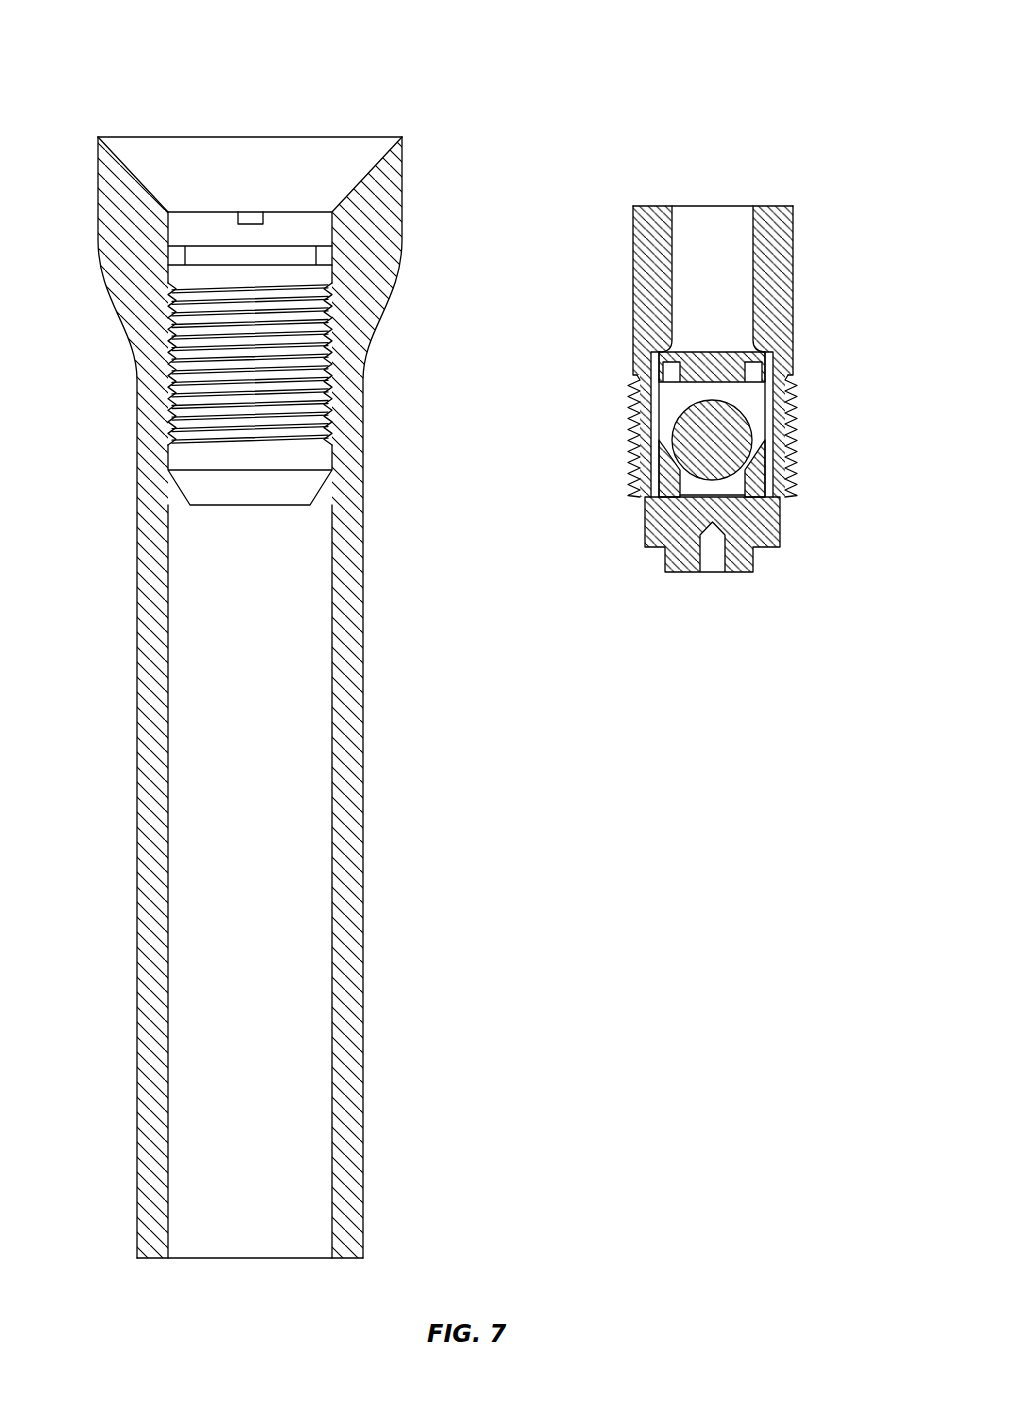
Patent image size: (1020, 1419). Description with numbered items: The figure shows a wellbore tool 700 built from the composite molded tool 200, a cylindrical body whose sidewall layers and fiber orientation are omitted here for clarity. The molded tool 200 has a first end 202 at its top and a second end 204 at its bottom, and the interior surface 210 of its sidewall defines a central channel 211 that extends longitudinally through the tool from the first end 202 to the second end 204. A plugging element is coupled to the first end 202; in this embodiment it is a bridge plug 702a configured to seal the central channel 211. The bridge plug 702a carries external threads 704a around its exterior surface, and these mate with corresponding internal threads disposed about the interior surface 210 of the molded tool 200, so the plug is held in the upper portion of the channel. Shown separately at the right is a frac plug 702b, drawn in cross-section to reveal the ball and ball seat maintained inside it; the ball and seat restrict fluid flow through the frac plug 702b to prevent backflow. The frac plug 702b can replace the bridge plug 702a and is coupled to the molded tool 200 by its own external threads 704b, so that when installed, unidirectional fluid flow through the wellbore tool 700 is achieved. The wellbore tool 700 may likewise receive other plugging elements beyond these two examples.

The wellbore tool 700 is at (131, 47).
The first end 202 is at (138, 118).
The molded tool 200 is at (377, 692).
The interior surface 210 is at (338, 1118).
The central channel 211 is at (273, 960).
The second end 204 is at (186, 1283).
The bridge plug 702a is at (246, 202).
The external threads 704a is at (348, 326).
The frac plug 702b is at (775, 200).
The external threads 704b is at (805, 445).